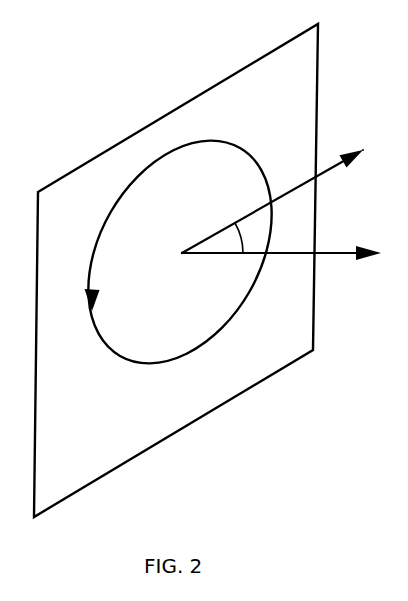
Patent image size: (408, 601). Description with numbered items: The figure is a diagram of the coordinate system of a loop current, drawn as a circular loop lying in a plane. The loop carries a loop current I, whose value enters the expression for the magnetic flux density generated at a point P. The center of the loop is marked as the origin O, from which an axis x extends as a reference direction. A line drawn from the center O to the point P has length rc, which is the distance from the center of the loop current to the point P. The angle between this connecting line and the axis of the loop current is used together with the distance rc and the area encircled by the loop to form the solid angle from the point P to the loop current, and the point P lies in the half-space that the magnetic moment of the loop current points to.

The loop current I is at (180, 252).
The origin / center of loop O is at (174, 263).
The x axis x is at (281, 264).
The distance from the center of the loop current to the point P rc is at (272, 201).
The point P is at (367, 168).